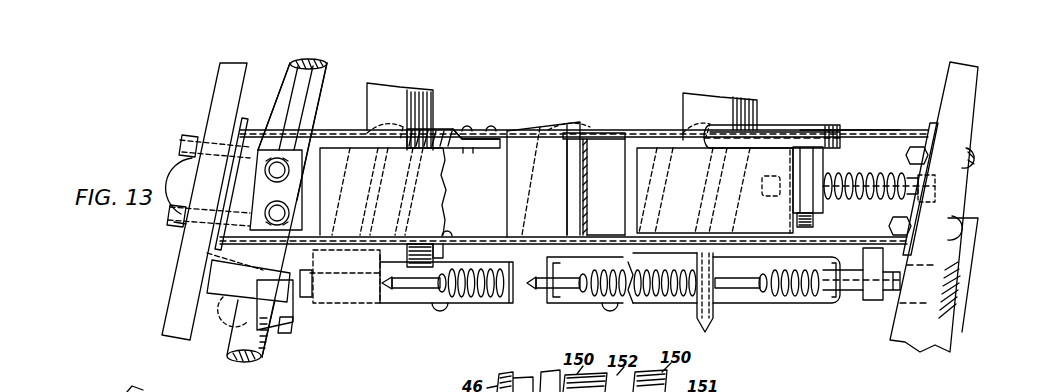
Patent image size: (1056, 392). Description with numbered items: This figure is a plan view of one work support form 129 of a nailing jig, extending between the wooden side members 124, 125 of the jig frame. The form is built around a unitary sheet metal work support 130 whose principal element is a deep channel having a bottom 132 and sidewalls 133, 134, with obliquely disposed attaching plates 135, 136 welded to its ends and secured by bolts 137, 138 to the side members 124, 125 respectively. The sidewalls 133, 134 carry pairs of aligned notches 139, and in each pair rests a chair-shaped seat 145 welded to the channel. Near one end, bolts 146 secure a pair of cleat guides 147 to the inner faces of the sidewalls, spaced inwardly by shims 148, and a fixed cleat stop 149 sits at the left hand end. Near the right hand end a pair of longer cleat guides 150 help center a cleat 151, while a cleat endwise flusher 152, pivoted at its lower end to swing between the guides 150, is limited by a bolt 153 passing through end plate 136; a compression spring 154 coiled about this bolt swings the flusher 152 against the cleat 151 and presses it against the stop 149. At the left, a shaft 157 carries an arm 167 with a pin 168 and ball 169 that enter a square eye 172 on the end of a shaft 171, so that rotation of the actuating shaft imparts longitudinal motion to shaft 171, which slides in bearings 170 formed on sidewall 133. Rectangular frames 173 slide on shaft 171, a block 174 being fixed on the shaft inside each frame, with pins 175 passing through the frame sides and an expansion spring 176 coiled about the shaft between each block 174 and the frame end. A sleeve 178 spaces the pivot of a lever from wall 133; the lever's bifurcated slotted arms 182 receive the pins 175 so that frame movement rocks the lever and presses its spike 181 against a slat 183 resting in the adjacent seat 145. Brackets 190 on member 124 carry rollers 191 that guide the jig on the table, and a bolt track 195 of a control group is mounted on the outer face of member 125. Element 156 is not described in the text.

The side member 124 is at (183, 277).
The side member 125 is at (968, 77).
The work support form 129 is at (856, 121).
The sheet metal work support 130 is at (893, 130).
The bottom 132 is at (610, 157).
The sidewall 133 is at (608, 232).
The sidewall 134 is at (597, 136).
The attaching plate 135 is at (243, 128).
The attaching plate 136 is at (935, 135).
The bolt 137 is at (185, 140).
The bolt 138 is at (972, 158).
The notch 139 is at (563, 138).
The chair-shaped seat 145 is at (403, 127).
The bolt 146 is at (467, 128).
The cleat guide 147 is at (440, 147).
The shim 148 is at (481, 140).
The fixed cleat stop 149 is at (263, 193).
The longer cleat guide 150 is at (782, 130).
The cleat 151 is at (327, 157).
The cleat endwise flusher 152 is at (820, 173).
The bolt 153 is at (857, 187).
The compression spring 154 is at (837, 193).
The bar 156 is at (220, 280).
The shaft 157 is at (322, 68).
The arm 167 is at (292, 334).
The pin 168 is at (288, 310).
The ball 169 is at (227, 310).
The bearing 170 is at (317, 296).
The shaft 171 is at (853, 292).
The square eye 172 is at (232, 258).
The rectangular frame 173 is at (477, 305).
The block 174 is at (410, 293).
The pin 175 is at (440, 312).
The expansion spring 176 is at (504, 296).
The sleeve 178 is at (567, 223).
The spike 181 is at (400, 289).
The slotted arm 182 is at (590, 297).
The slat 183 is at (407, 92).
The bracket 190 is at (178, 228).
The roller 191 is at (177, 168).
The bolt track 195 is at (950, 285).